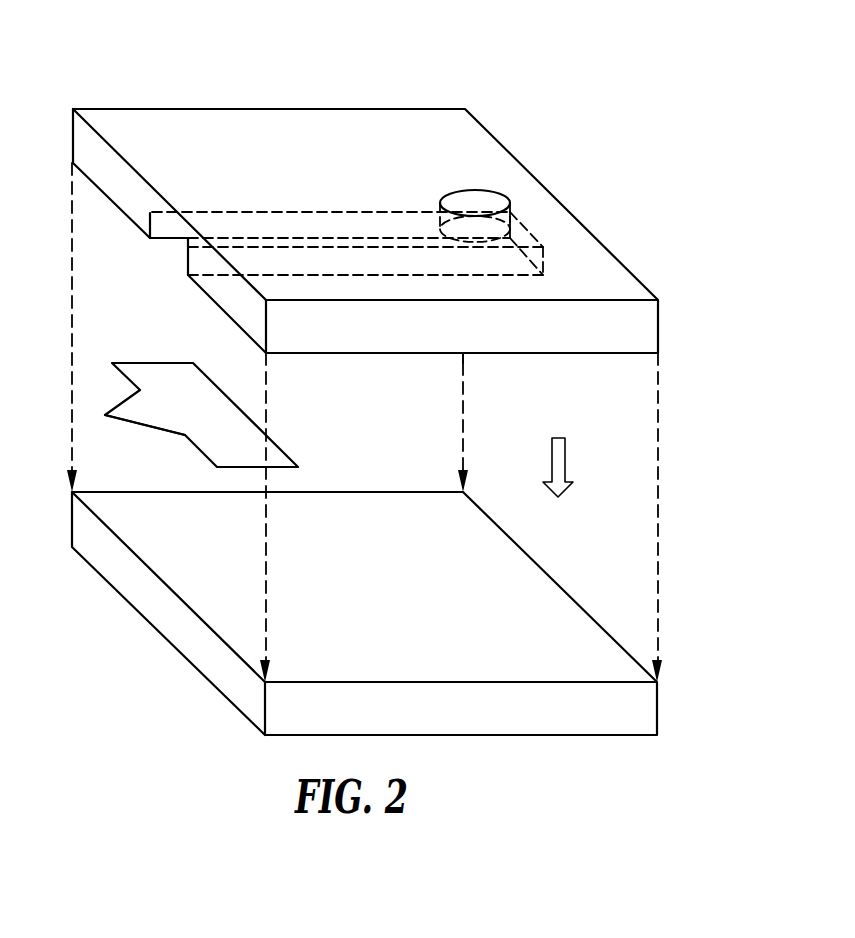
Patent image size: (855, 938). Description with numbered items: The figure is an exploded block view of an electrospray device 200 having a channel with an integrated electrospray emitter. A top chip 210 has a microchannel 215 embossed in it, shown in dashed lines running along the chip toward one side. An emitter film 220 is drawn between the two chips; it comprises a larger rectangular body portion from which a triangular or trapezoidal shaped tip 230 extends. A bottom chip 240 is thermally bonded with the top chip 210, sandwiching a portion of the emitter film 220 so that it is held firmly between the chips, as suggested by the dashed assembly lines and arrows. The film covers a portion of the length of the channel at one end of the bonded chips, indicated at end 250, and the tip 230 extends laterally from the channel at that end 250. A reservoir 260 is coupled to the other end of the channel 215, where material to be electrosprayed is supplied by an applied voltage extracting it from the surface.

The electrospray device 200 is at (596, 40).
The top chip 210 is at (270, 109).
The microchannel 215 is at (173, 249).
The emitter film 220 is at (152, 363).
The tip 230 is at (143, 427).
The bottom chip 240 is at (659, 707).
The end of channel 250 is at (117, 188).
The reservoir 260 is at (485, 198).